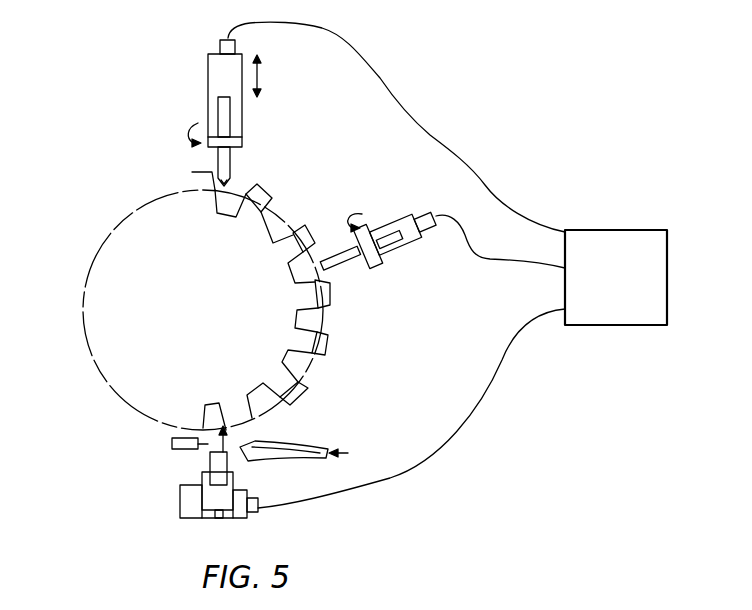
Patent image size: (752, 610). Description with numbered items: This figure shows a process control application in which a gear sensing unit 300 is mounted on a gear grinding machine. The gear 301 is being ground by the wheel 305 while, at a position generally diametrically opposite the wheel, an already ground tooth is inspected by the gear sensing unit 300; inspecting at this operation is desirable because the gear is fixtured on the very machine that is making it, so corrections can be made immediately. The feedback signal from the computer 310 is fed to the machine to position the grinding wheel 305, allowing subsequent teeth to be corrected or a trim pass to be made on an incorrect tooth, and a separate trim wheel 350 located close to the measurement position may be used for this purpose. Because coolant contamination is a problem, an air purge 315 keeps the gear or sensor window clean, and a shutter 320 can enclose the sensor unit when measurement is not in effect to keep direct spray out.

The gear sensing unit 300 is at (233, 466).
The gears 301 is at (328, 336).
The wheel 305 is at (310, 147).
The computer 310 is at (625, 277).
The air purge 315 is at (256, 441).
The shutter 320 is at (172, 444).
The trim wheel 350 is at (358, 268).